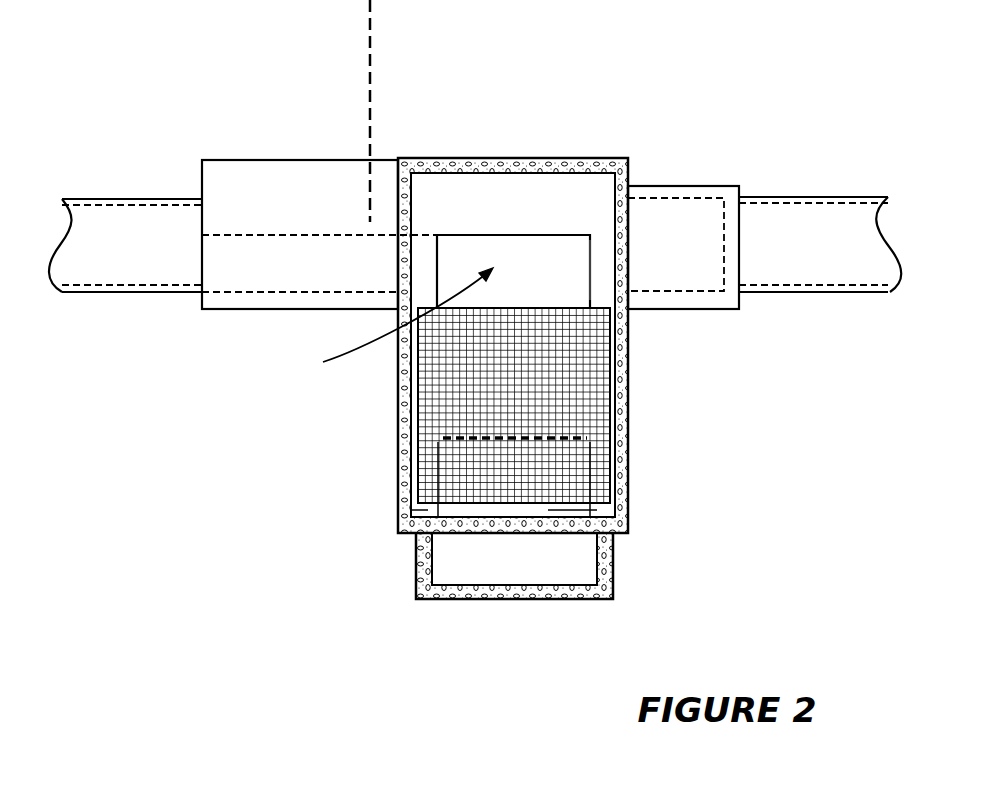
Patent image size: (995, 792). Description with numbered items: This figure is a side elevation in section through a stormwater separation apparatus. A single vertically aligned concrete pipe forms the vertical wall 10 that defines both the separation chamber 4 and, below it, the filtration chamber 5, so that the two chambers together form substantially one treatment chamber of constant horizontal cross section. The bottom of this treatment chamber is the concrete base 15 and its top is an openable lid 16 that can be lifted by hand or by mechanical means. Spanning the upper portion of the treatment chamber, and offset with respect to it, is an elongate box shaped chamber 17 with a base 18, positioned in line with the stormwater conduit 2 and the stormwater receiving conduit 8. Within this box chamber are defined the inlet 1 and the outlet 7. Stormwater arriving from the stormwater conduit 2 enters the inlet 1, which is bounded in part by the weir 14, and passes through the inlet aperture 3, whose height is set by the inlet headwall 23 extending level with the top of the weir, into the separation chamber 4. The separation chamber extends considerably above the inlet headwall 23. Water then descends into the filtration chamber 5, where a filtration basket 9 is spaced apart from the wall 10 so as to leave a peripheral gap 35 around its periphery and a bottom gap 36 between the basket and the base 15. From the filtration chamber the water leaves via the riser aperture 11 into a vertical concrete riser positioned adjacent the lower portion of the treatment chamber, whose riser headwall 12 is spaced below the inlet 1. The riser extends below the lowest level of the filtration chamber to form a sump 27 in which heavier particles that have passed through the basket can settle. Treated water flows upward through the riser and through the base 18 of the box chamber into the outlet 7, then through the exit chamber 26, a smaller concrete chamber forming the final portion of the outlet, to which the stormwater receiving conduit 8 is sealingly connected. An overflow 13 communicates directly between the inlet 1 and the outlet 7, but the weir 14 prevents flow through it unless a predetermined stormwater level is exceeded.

The inlet 1 is at (322, 265).
The stormwater conduit 2 is at (137, 262).
The inlet aperture 3 is at (397, 323).
The separation chamber 4 is at (605, 268).
The filtration chamber 5 is at (592, 410).
The outlet 7 is at (668, 240).
The stormwater receiving conduit 8 is at (788, 222).
The filtration basket 9 is at (592, 365).
The wall 10 is at (405, 403).
The riser aperture 11 is at (632, 505).
The riser headwall 12 is at (548, 440).
The overflow 13 is at (372, 205).
The weir 14 is at (277, 265).
The concrete base 15 is at (608, 527).
The openable lid 16 is at (500, 158).
The elongate box shaped chamber 17 is at (185, 152).
The base 18 is at (262, 302).
The inlet headwall 23 is at (533, 236).
The exit chamber 26 is at (657, 198).
The sump 27 is at (488, 565).
The peripheral gap 35 is at (415, 438).
The bottom gap 36 is at (427, 510).